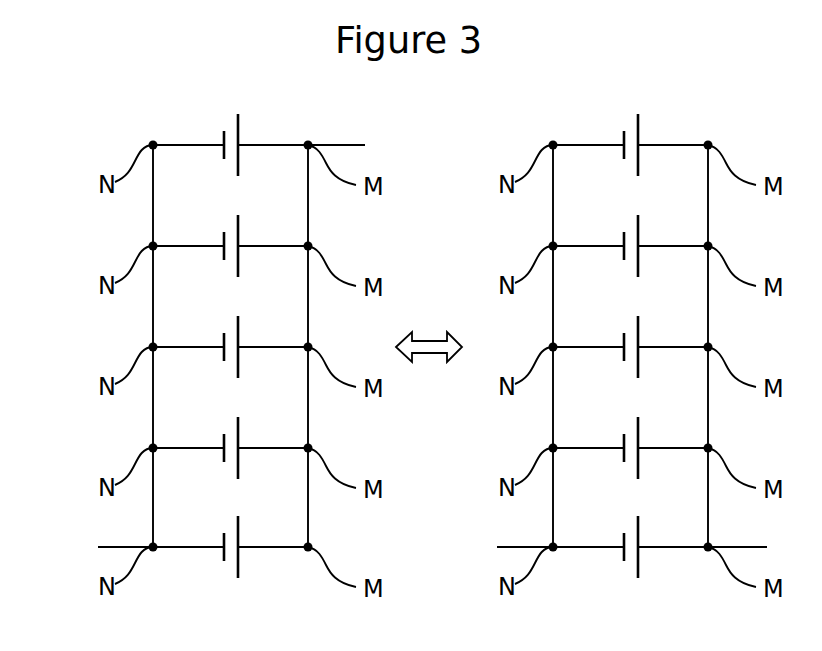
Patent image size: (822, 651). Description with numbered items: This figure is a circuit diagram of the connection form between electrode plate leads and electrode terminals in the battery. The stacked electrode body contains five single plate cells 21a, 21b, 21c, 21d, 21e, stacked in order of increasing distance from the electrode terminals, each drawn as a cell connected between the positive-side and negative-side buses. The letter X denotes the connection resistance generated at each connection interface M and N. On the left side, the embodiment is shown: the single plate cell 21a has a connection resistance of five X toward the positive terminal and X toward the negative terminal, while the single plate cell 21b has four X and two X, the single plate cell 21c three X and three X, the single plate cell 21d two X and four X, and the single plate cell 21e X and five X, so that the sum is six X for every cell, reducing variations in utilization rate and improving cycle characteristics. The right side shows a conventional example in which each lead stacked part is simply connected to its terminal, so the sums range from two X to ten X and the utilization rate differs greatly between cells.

The single plate cell 21a is at (430, 553).
The single plate cell 21b is at (430, 454).
The single plate cell 21c is at (430, 353).
The single plate cell 21d is at (430, 252).
The single plate cell 21e is at (430, 151).